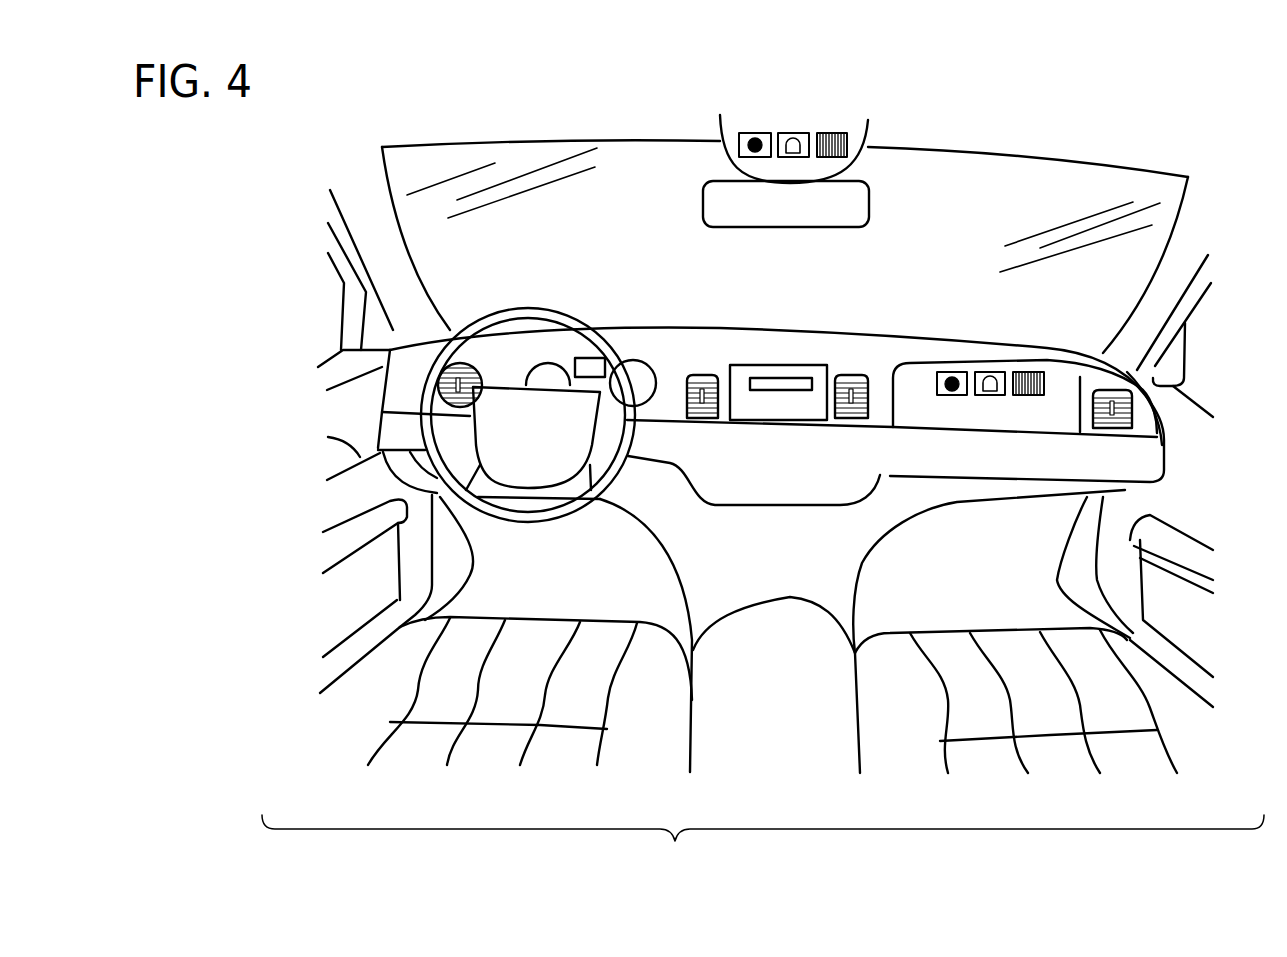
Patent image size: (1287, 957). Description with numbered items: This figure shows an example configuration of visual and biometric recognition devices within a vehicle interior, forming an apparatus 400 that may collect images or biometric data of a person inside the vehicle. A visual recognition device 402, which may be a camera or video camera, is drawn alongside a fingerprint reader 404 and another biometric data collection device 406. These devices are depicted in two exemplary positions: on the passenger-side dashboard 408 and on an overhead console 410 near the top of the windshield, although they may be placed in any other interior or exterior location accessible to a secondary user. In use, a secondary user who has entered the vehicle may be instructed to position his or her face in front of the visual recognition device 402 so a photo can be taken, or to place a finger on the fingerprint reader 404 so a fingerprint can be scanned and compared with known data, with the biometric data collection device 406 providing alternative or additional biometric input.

The apparatus 400 is at (763, 505).
The visual recognition device 402 is at (746, 132).
The fingerprint reader 404 is at (786, 132).
The biometric data collection device 406 is at (832, 132).
The passenger-side dashboard 408 is at (1077, 363).
The overhead console 410 is at (729, 101).